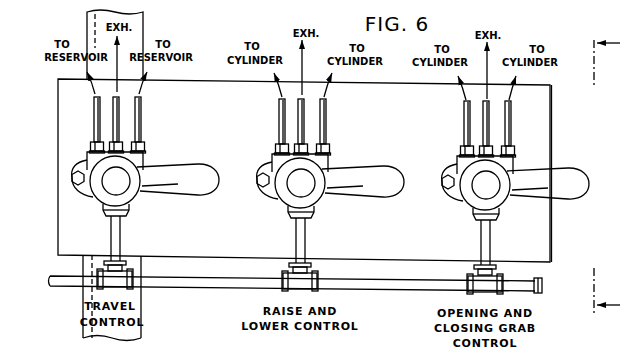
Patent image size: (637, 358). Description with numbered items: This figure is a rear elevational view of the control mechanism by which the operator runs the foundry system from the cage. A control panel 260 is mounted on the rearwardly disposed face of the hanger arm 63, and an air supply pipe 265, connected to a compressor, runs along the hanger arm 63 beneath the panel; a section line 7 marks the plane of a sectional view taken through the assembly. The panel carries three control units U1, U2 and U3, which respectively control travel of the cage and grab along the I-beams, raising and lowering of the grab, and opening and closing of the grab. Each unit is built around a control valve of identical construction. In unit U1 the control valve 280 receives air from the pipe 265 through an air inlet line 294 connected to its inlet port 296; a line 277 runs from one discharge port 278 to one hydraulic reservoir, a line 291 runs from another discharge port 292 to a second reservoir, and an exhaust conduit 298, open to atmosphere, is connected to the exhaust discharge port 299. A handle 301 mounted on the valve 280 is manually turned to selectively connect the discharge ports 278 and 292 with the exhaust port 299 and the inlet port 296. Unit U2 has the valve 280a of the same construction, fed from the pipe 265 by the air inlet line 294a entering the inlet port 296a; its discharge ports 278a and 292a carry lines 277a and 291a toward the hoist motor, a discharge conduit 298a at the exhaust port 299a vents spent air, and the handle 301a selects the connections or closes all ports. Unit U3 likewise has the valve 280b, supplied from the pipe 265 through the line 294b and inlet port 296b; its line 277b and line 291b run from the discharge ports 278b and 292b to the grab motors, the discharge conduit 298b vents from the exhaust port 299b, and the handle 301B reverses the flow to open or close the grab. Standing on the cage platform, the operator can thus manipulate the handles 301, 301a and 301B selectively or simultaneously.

The control panel 260 is at (555, 126).
The hanger arm 63 is at (145, 28).
The pipe 265 is at (406, 278).
The section line 7- 7 is at (609, 178).
The control unit U1 is at (140, 179).
The control unit U2 is at (313, 180).
The control unit U3 is at (524, 182).
The exhaust conduit 298 is at (95, 104).
The line 277 is at (113, 107).
The line 291 is at (141, 106).
The discharge port 278 is at (91, 147).
The discharge port 299 is at (121, 146).
The discharge port 292 is at (144, 148).
The control valve 280 is at (92, 192).
The handle 301 is at (177, 190).
The inlet port 296 is at (106, 215).
The air inlet line 294 is at (122, 238).
The discharge conduit 298a is at (280, 105).
The line 277a is at (298, 113).
The cylinder pipe 291a is at (326, 106).
The discharge port 278a is at (276, 148).
The exhaust port 299a is at (308, 147).
The discharge port 292a is at (328, 148).
The valve 280a is at (276, 196).
The handle 301a is at (367, 193).
The air inlet port 296a is at (290, 217).
The air inlet line 294a is at (296, 246).
The discharge conduit 298b is at (463, 107).
The line 277b is at (484, 115).
The line 291b is at (506, 108).
The discharge port 278b is at (460, 152).
The discharge port 299b is at (492, 150).
The discharge port 292b is at (498, 150).
The valve 280b is at (463, 195).
The handle 301B is at (582, 176).
The inlet port 296b is at (475, 219).
The line 294b is at (482, 250).